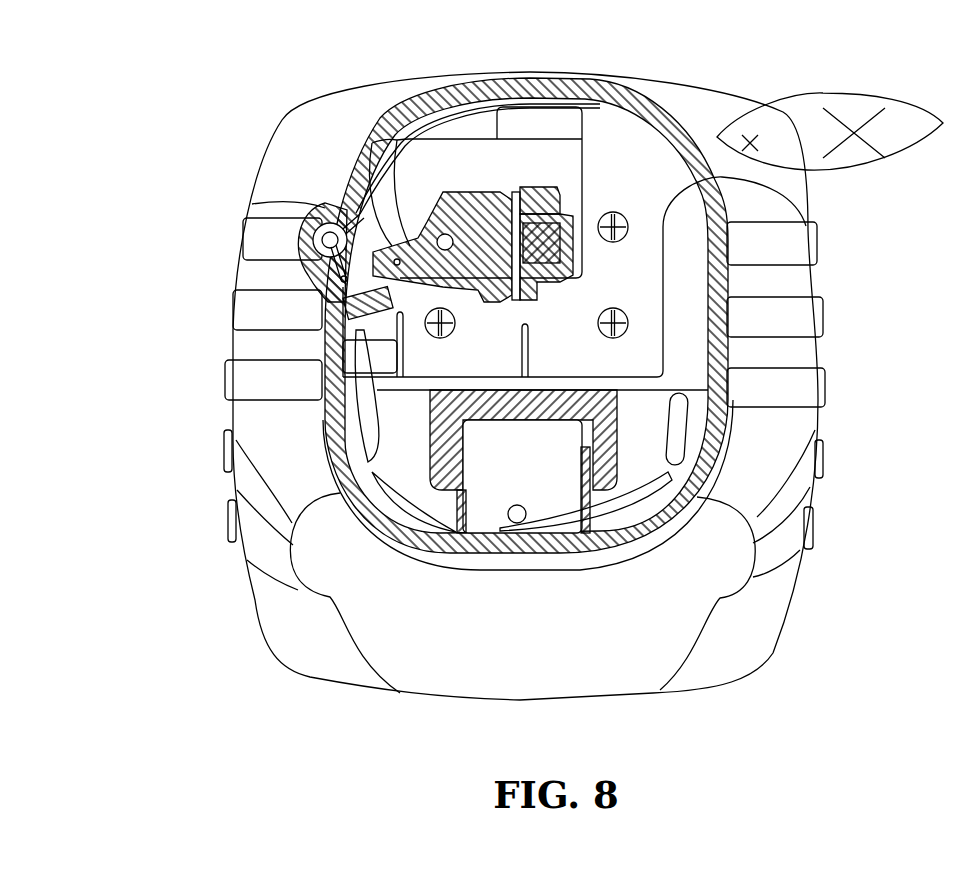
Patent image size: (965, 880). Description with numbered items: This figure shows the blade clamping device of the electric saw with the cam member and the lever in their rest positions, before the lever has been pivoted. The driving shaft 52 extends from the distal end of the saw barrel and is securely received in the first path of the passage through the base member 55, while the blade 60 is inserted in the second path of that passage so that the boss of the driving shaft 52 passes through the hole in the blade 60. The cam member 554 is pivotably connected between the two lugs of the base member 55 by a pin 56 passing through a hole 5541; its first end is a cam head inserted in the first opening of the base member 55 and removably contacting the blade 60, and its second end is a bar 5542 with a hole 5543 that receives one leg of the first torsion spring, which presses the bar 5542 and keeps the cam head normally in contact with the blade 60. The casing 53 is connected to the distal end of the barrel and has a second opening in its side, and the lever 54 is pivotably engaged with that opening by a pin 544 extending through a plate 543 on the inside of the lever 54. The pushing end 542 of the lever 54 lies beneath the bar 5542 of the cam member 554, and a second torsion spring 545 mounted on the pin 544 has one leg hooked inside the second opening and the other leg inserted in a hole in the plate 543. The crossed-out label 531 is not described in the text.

The driving shaft 52 is at (560, 262).
The casing 53 is at (806, 195).
The case lug 531 is at (758, 142).
The lever 54 is at (403, 110).
The base member 55 is at (573, 190).
The pin 56 is at (497, 240).
The blade 60 is at (550, 283).
The pushing end 542 is at (345, 310).
The plate 543 is at (345, 207).
The pin 544 is at (322, 212).
The second torsion spring 545 is at (345, 173).
The cam member 554 is at (557, 217).
The hole 5541 is at (427, 222).
The bar 5542 is at (372, 473).
The hole 5543 is at (358, 196).